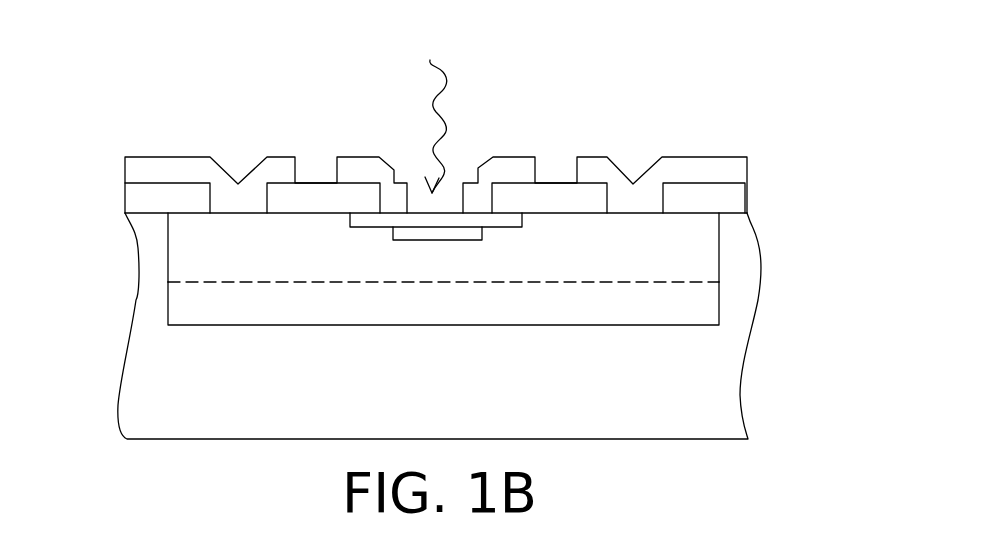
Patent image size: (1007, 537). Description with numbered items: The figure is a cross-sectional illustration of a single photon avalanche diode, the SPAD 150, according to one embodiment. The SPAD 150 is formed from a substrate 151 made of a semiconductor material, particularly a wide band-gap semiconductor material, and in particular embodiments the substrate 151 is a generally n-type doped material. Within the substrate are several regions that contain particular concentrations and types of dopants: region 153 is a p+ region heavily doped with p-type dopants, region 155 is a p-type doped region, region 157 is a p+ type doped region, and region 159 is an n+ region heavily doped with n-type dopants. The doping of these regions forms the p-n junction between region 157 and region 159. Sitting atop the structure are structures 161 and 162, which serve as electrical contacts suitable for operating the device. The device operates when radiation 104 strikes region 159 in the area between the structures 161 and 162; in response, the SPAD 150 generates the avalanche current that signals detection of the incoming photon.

The SPAD 150 is at (796, 35).
The substrate 151 is at (655, 403).
The region 153 is at (655, 319).
The region 155 is at (655, 263).
The region 157 is at (435, 240).
The region 159 is at (368, 223).
The structure 161 is at (365, 157).
The structure 162 is at (508, 157).
The radiation 104 is at (448, 78).